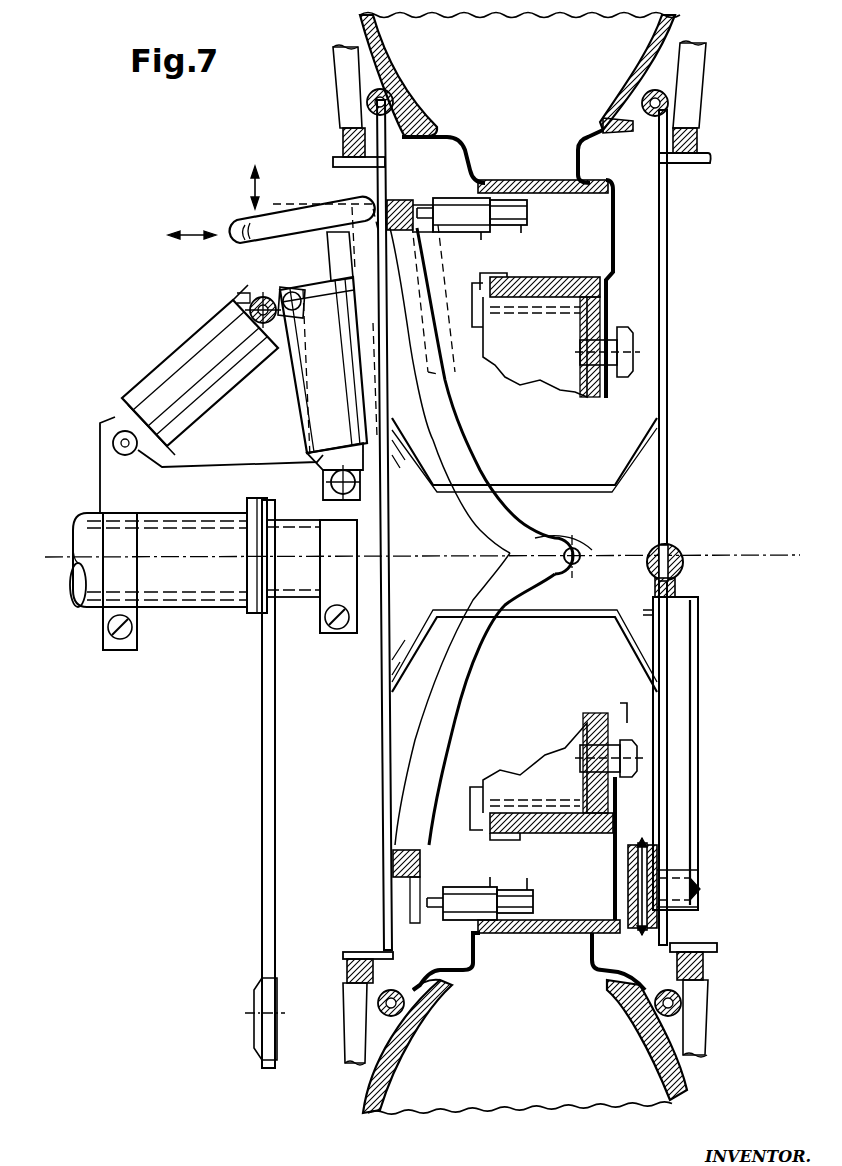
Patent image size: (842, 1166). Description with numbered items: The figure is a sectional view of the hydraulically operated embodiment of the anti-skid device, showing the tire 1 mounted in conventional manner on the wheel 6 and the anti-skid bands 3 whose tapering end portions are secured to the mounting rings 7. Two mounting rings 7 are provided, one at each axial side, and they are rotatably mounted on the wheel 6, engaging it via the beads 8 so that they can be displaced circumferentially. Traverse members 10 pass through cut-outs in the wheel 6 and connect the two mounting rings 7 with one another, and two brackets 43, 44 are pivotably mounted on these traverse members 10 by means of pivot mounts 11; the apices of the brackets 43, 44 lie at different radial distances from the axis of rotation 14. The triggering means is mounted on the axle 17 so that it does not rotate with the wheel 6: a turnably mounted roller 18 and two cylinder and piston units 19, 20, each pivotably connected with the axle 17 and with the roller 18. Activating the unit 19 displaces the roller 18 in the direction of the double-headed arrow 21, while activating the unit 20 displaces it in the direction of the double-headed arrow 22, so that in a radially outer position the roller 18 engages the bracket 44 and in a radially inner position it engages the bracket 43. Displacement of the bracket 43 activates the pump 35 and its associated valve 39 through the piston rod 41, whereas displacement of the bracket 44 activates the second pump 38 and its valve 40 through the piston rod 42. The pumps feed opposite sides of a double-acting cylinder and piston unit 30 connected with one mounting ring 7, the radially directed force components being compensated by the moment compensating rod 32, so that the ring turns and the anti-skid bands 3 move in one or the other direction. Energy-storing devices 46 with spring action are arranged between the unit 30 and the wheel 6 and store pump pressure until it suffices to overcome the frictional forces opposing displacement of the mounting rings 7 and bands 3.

The tire 1 is at (673, 38).
The anti-skid bands 3 is at (690, 77).
The wheel 6 is at (460, 140).
The mounting ring 7 is at (333, 160).
The beads 8 is at (367, 97).
The traverse members 10 is at (405, 612).
The pivot mounts 11 is at (583, 548).
The axis of rotation 14 is at (62, 563).
The axle 17 is at (187, 580).
The roller 18 is at (240, 225).
The cylinder and piston unit 19 is at (170, 377).
The cylinder and piston unit 20 is at (317, 420).
The double-headed arrow 21 is at (195, 240).
The double-headed arrow 22 is at (250, 183).
The double-acting cylinder and piston unit 30 is at (673, 675).
The moment compensating rod 32 is at (685, 560).
The pump 35 is at (463, 967).
The second pump 38 is at (473, 198).
The valve 39 is at (530, 920).
The valve 40 is at (527, 200).
The piston rod 41 is at (437, 1003).
The piston rod 42 is at (428, 200).
The bracket 43 is at (422, 788).
The bracket 44 is at (457, 450).
The energy-storing devices 46 is at (663, 893).